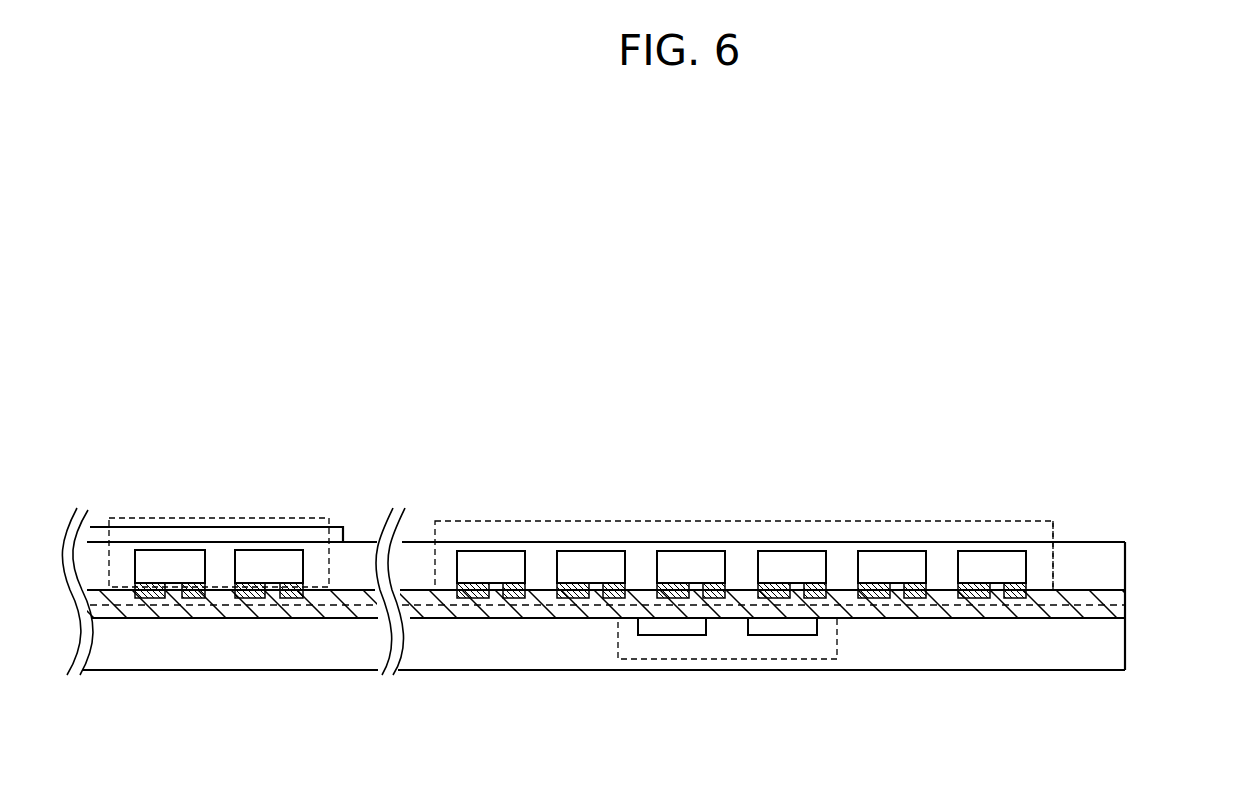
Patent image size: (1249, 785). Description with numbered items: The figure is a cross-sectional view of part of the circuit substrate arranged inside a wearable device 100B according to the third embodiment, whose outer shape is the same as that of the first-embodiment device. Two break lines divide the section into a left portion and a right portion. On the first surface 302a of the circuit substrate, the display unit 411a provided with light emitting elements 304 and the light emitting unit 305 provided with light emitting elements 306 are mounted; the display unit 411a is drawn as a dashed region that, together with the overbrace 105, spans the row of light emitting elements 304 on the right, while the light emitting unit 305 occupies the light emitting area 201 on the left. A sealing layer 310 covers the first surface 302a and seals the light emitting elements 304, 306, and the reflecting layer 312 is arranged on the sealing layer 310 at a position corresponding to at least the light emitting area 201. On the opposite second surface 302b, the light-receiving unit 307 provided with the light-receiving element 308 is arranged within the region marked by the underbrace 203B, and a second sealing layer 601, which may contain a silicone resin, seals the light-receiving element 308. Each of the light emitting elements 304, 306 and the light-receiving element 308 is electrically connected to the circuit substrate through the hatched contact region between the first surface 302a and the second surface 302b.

The wearable device 100B is at (121, 204).
The semiconductor chip mounting region 105 is at (1045, 441).
The light emitting area 201 is at (343, 683).
The second region 203B is at (840, 685).
The first surface 302a is at (1103, 600).
The second surface 302b is at (1100, 623).
The light emitting element 304 is at (792, 551).
The light emitting unit 305 is at (225, 518).
The light emitting element 306 is at (268, 550).
The light-receiving unit 307 is at (786, 636).
The light-receiving element 308 is at (663, 636).
The sealing layer 310 is at (1125, 568).
The reflecting layer 312 is at (177, 527).
The display unit 411a is at (943, 521).
The sealing layer 601 is at (1125, 662).